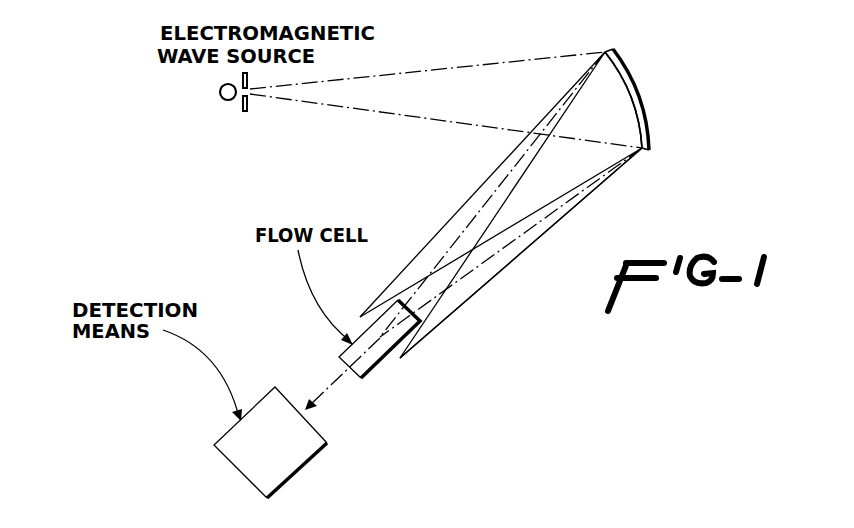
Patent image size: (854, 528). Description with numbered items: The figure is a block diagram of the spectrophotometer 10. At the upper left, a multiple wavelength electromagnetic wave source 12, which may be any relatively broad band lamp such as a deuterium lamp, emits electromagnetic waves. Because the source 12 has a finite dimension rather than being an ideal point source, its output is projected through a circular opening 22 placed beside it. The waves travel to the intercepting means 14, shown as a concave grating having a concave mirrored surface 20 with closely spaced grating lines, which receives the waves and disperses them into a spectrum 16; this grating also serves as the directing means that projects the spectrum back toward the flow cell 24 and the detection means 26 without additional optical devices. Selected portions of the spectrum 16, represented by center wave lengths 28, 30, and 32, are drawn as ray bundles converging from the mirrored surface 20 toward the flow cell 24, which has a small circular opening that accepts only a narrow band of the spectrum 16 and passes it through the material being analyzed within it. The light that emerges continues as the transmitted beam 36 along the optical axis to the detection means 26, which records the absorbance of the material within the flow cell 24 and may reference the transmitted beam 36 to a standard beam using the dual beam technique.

The spectrophotometer 10 is at (617, 41).
The multiple wavelength electromagnetic wave source 12 is at (219, 106).
The intercepting means 14 is at (656, 126).
The spectrum 16 is at (462, 305).
The concave mirrored surface 20 is at (635, 88).
The circular opening 22 is at (249, 107).
The flow cell 24 is at (372, 359).
The detection means 26 is at (250, 473).
The center wave length 28 is at (433, 253).
The center wave length 30 is at (444, 274).
The center wave length 32 is at (438, 318).
The transmitted beam 36 is at (328, 386).